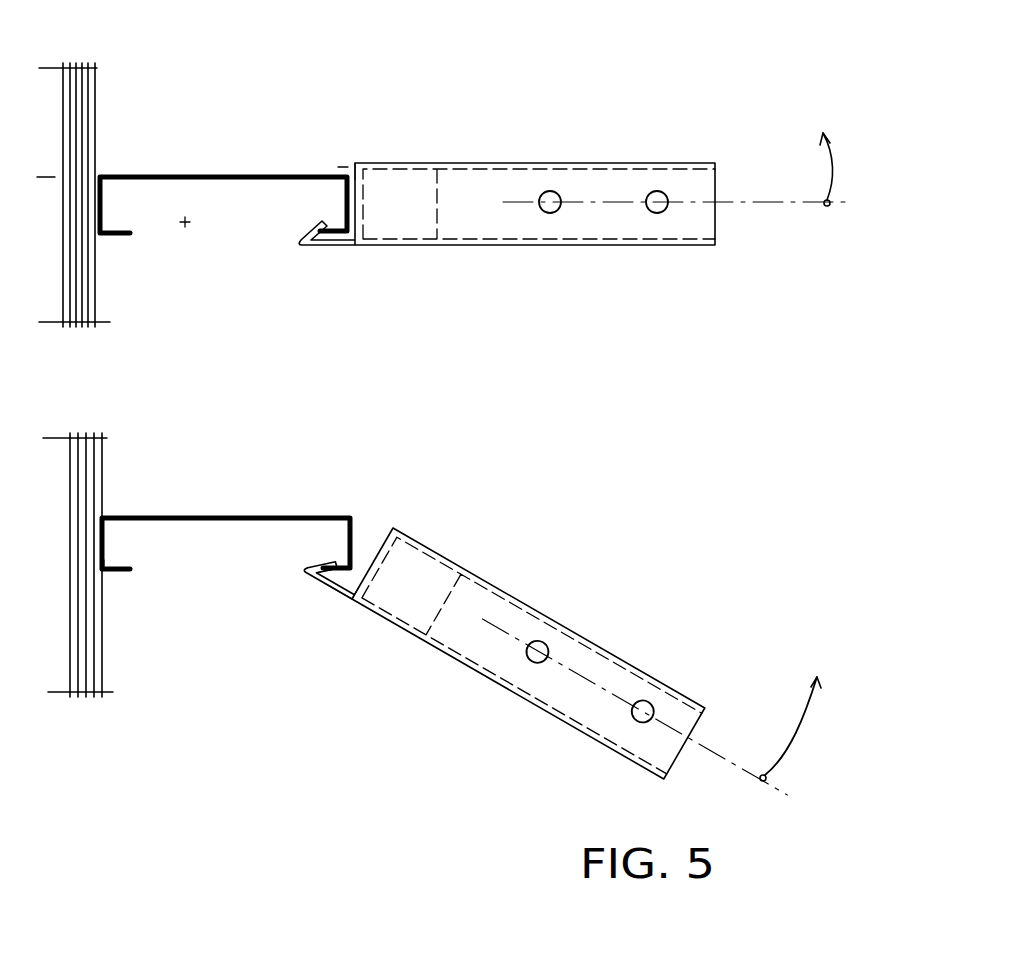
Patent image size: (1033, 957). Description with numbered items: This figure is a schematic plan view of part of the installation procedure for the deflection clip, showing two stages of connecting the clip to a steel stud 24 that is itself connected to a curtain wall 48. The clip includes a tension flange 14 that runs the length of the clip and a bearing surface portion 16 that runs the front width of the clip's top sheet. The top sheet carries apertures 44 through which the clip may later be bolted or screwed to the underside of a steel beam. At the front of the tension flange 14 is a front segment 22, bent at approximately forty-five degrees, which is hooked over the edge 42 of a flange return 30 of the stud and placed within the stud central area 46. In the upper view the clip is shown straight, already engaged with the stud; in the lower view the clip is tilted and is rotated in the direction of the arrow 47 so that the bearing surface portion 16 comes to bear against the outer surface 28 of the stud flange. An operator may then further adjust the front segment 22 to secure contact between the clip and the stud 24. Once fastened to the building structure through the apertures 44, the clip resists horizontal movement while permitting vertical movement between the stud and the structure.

The tension flange 14 is at (497, 680).
The bearing surface portion 16 is at (350, 167).
The front segment 22 is at (305, 567).
The steel stud 24 is at (197, 185).
The outer surface of the stud flange 28 is at (333, 562).
The flange return 30 is at (343, 575).
The edge of the flange return 42 is at (362, 555).
The apertures 44 is at (570, 223).
The stud central area 46 is at (222, 555).
The arrow 47 is at (797, 740).
The curtain wall 48 is at (100, 483).